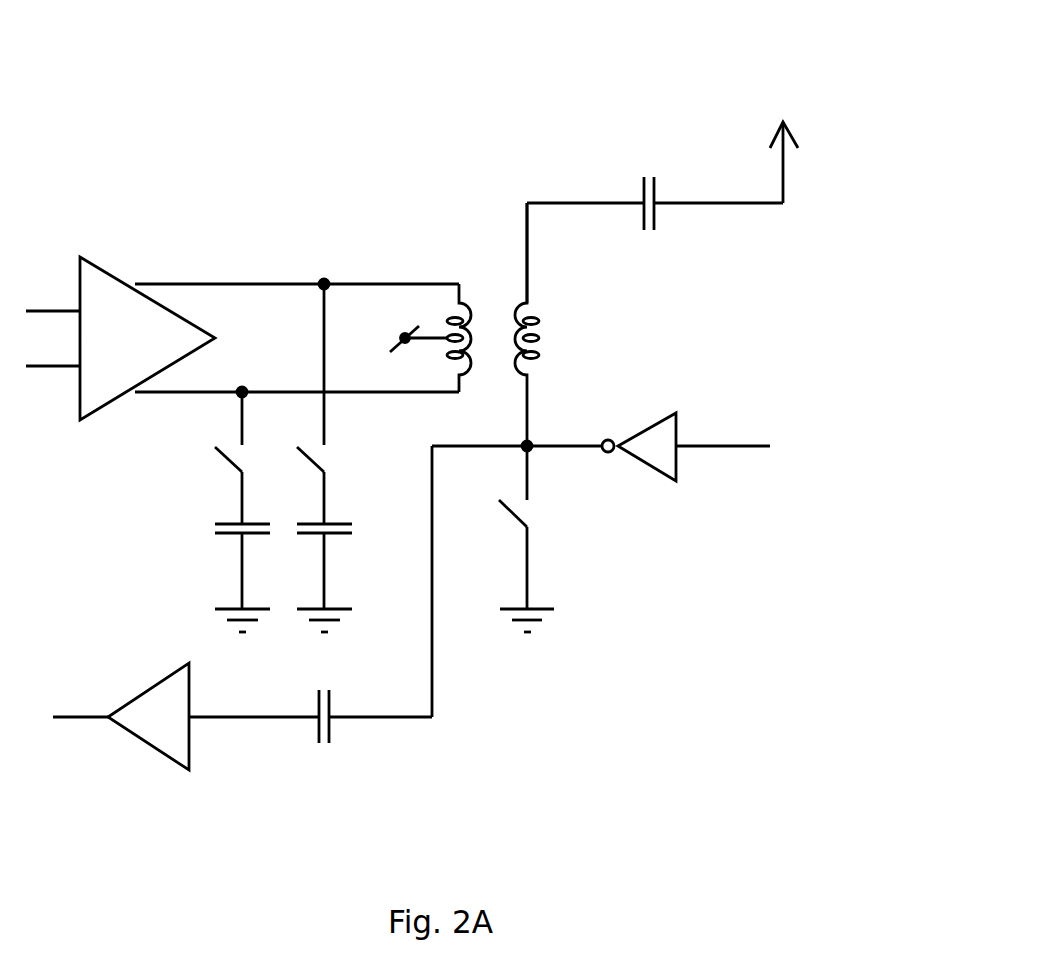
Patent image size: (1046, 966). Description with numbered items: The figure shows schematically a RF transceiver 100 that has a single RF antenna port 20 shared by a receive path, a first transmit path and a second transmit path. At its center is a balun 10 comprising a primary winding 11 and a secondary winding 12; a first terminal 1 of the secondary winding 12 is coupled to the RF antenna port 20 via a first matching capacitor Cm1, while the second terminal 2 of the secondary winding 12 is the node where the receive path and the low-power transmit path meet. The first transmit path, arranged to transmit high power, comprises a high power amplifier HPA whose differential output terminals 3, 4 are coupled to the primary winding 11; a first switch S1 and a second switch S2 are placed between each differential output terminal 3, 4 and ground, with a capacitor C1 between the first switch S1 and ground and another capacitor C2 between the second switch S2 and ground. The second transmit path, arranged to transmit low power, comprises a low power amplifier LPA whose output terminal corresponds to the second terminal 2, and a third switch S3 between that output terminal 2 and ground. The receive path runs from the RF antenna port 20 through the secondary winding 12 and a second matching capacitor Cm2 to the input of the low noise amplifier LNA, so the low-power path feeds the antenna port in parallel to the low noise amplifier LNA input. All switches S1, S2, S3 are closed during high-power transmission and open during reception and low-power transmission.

The RF transceiver 100 is at (823, 98).
The balun 10 is at (503, 322).
The primary winding 11 is at (453, 362).
The secondary winding 12 is at (542, 340).
The first terminal 1 is at (542, 253).
The second terminal 2 is at (517, 430).
The differential output terminal 3 is at (297, 348).
The differential output terminal 4 is at (297, 402).
The RF antenna port 20 is at (800, 162).
The high power amplifier HPA is at (98, 300).
The low power amplifier LPA is at (662, 455).
The low noise amplifier LNA is at (121, 711).
The first switch S1 is at (218, 485).
The second switch S2 is at (297, 485).
The third switch S3 is at (516, 539).
The capacitor C1 is at (224, 574).
The capacitor C2 is at (342, 574).
The first matching capacitor Cm1 is at (655, 180).
The second matching capacitor Cm2 is at (310, 613).